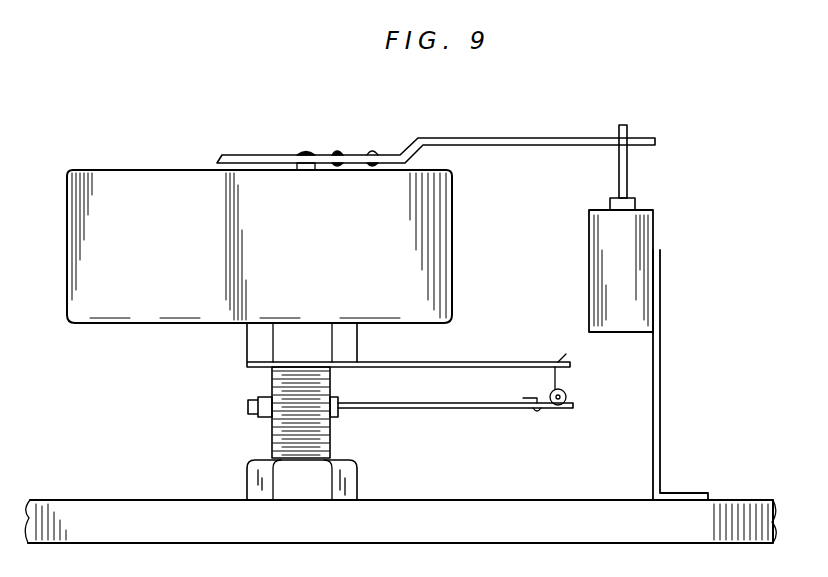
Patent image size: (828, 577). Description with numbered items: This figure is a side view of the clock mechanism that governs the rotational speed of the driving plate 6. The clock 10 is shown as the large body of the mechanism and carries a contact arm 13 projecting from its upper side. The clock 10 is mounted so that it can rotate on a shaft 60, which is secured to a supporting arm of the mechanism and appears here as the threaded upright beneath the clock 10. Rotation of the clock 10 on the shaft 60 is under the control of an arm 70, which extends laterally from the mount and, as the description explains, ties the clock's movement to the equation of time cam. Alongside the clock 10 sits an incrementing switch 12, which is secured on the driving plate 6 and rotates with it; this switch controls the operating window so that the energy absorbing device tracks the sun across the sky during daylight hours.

The driving plate 6 is at (200, 514).
The clock 10 is at (116, 184).
The incrementing switch 12 is at (632, 233).
The contact arm 13 is at (628, 166).
The shaft 60 is at (331, 437).
The arm 70 is at (517, 364).